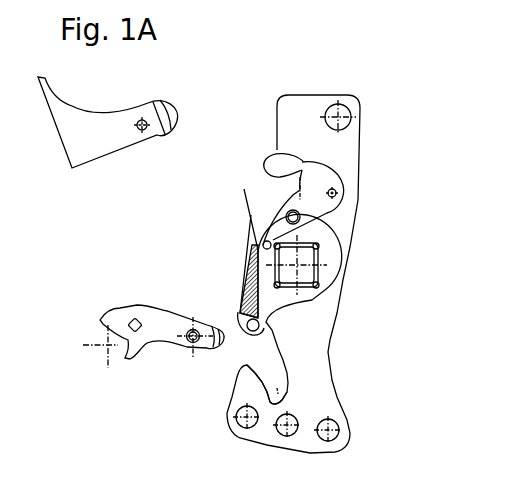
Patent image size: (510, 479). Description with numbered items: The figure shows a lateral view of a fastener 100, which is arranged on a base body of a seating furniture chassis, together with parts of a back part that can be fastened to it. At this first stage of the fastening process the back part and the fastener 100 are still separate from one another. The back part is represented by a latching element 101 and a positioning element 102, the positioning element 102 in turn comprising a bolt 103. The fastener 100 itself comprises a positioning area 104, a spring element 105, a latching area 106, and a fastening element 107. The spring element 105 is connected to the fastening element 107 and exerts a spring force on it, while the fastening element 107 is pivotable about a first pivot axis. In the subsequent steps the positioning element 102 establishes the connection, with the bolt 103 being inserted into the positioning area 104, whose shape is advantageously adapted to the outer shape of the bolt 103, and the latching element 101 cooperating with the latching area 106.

The fastener 100 is at (375, 82).
The latching element 101 is at (98, 180).
The positioning element 102 is at (108, 300).
The bolt 103 is at (192, 341).
The positioning area 104 is at (286, 398).
The spring element 105 is at (243, 307).
The latching area 106 is at (298, 187).
The fastening element 107 is at (314, 203).